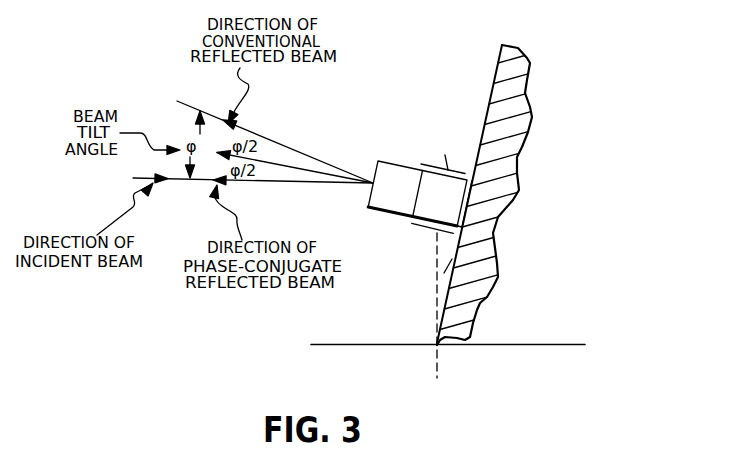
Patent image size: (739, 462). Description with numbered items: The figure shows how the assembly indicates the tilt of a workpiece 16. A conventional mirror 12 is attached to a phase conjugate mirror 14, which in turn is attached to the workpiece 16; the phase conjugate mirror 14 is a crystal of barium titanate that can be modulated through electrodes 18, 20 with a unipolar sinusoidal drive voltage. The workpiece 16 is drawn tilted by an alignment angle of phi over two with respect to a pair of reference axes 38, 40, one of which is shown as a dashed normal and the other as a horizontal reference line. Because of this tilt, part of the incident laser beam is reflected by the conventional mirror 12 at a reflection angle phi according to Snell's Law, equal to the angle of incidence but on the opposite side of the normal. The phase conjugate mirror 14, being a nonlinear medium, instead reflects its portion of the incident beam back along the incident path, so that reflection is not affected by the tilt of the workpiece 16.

The conventional mirror 12 is at (373, 178).
The phase conjugate mirror 14 is at (432, 196).
The workpiece 16 is at (520, 123).
The electrode 18 is at (447, 155).
The electrode 20 is at (430, 240).
The reference axis 38 is at (437, 292).
The reference axis 40 is at (522, 345).